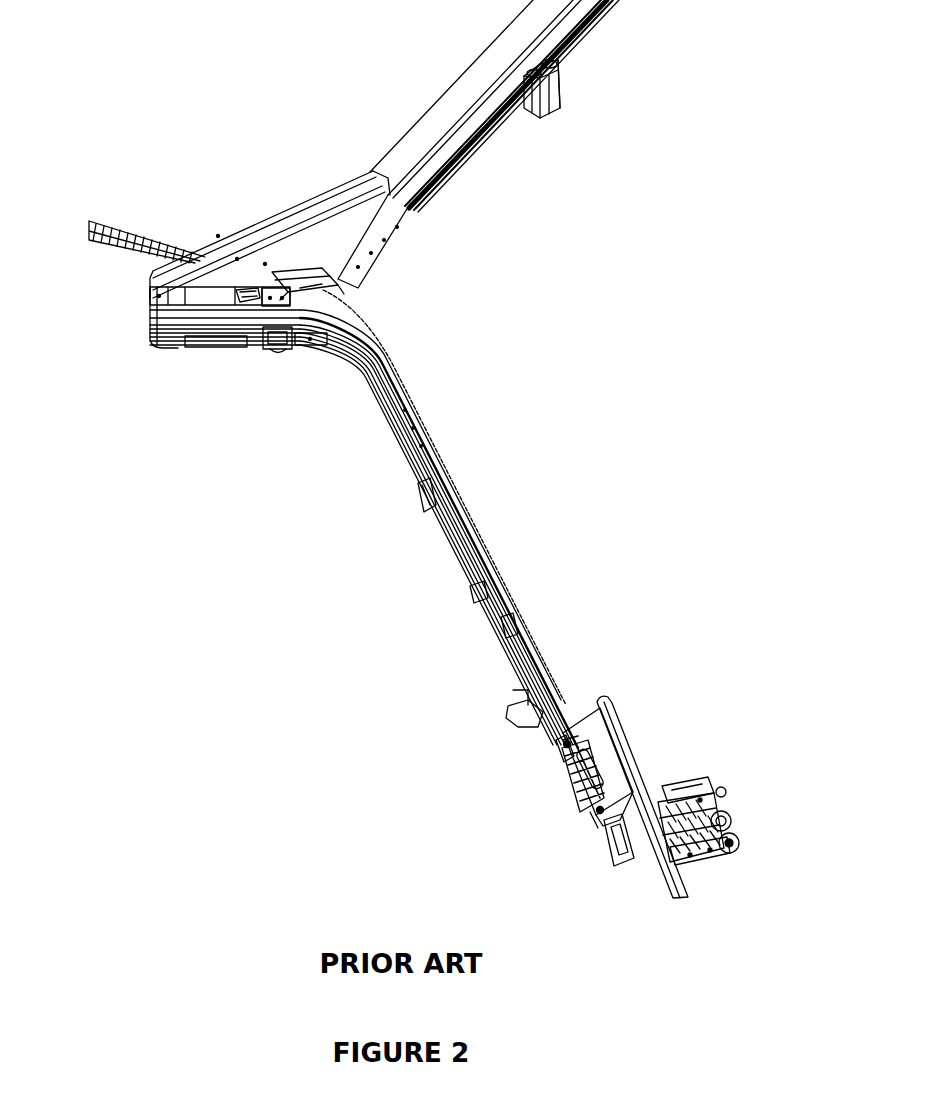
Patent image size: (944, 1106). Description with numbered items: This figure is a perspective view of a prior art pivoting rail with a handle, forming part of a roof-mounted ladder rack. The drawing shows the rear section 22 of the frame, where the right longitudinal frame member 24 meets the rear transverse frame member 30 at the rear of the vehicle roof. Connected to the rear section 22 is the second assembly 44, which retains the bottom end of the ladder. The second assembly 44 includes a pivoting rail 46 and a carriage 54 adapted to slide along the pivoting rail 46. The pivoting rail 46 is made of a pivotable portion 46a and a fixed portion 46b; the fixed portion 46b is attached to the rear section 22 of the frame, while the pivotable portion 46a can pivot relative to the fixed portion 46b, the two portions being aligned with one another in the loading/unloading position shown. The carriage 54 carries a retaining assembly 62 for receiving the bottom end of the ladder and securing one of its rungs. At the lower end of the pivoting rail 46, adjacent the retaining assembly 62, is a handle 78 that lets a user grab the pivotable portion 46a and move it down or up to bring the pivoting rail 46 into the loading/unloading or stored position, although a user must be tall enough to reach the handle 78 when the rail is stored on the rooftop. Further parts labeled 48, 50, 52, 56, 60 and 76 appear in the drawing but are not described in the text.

The rear section 22 is at (267, 144).
The right longitudinal frame member 24 is at (450, 112).
The rear transverse frame member 30 is at (150, 238).
The second assembly 44 is at (444, 595).
The pivoting rail 46 is at (361, 516).
The pivotable portion 46a is at (436, 535).
The fixed portion 46b is at (214, 322).
The bracket block 48 is at (297, 342).
The mounting plate 50 is at (580, 797).
The rail flange 52 is at (455, 528).
The carriage 54 is at (588, 705).
The fastener 56 is at (558, 741).
The lower block 60 is at (267, 372).
The retaining assembly 62 is at (692, 776).
The clip 76 is at (234, 306).
The handle 78 is at (619, 864).